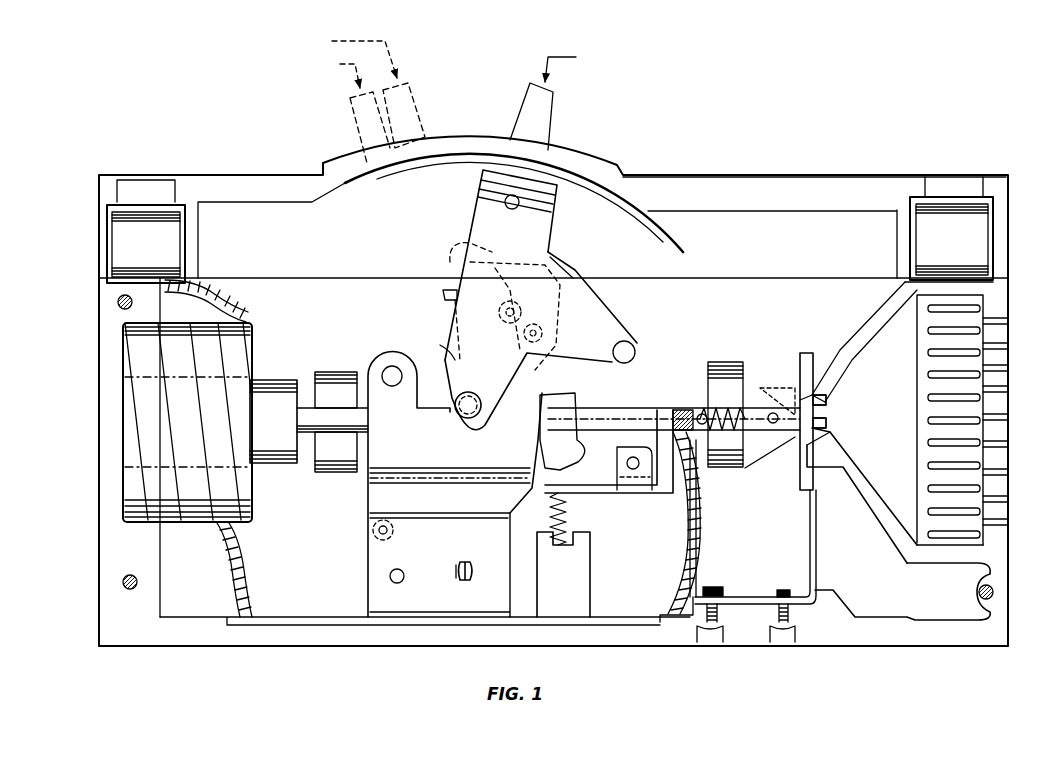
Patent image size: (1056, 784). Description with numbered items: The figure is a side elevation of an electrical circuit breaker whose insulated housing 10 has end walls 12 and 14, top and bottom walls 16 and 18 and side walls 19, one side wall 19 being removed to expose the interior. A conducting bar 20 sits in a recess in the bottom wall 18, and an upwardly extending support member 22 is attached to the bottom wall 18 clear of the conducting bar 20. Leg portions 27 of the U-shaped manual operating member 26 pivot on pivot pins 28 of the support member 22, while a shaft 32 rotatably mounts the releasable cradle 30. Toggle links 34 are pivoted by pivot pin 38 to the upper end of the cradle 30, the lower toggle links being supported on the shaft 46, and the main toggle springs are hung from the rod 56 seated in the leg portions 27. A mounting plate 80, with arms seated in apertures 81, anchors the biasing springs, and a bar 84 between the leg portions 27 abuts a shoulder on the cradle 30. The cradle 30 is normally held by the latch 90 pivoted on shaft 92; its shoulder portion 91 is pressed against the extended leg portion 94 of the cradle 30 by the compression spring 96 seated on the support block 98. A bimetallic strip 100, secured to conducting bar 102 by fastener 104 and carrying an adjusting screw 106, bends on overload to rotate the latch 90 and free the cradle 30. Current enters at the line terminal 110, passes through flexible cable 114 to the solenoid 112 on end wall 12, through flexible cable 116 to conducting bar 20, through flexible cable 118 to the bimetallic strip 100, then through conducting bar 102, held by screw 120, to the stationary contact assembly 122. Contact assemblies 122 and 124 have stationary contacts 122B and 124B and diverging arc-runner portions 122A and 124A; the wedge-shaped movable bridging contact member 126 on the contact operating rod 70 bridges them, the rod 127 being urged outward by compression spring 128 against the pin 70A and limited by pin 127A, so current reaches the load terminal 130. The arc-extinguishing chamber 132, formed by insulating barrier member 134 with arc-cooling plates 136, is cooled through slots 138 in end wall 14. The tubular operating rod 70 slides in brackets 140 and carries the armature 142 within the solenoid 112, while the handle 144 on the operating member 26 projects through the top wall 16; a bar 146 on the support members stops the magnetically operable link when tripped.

The insulated housing 10 is at (232, 650).
The end wall 12 is at (99, 560).
The end wall 14 is at (1008, 640).
The top wall 16 is at (806, 178).
The bottom wall 18 is at (386, 646).
The side wall 19 is at (778, 300).
The conducting bar 20 is at (295, 617).
The support member 22 is at (368, 545).
The manual operating member 26 is at (470, 195).
The leg portion 27 is at (440, 345).
The pivot pin 28 is at (460, 393).
The releasable cradle 30 is at (576, 266).
The shaft 32 is at (545, 330).
The toggle link 34 is at (440, 295).
The pivot pin 38 is at (478, 252).
The shaft 46 is at (390, 577).
The rod 56 is at (519, 203).
The contact operating rod 70 is at (340, 404).
The pin 70A is at (702, 408).
The mounting plate 80 is at (457, 573).
The aperture 81 is at (475, 566).
The bar 84 is at (636, 346).
The latch 90 is at (605, 497).
The shoulder portion 91 is at (530, 462).
The shaft 92 is at (627, 462).
The extended leg portion 94 is at (542, 440).
The compression spring 96 is at (550, 519).
The support block 98 is at (592, 585).
The bimetallic strip 100 is at (698, 520).
The conducting bar 102 is at (750, 597).
The fastener 104 is at (713, 588).
The adjusting screw 106 is at (672, 412).
The line terminal 110 is at (160, 253).
The solenoid 112 is at (256, 334).
The flexible cable 114 is at (250, 306).
The flexible cable 116 is at (246, 542).
The flexible cable 118 is at (672, 538).
The screw 120 is at (784, 590).
The stationary contact assembly 122 is at (868, 452).
The arc-runner portion 122A is at (872, 480).
The stationary contact 122B is at (826, 424).
The stationary contact assembly 124 is at (848, 380).
The arc-runner portion 124A is at (862, 360).
The stationary contact 124B is at (828, 402).
The movable bridging contact member 126 is at (792, 440).
The rod 127 is at (746, 460).
The pin 127A is at (774, 398).
The compression spring 128 is at (730, 408).
The load terminal 130 is at (960, 248).
The arc-extinguishing chamber 132 is at (918, 428).
The insulating barrier member 134 is at (945, 565).
The arc-cooling plate 136 is at (928, 352).
The slot 138 is at (1010, 362).
The bracket 140 is at (302, 450).
The armature 142 is at (283, 390).
The handle 144 is at (553, 104).
The bar 146 is at (390, 352).